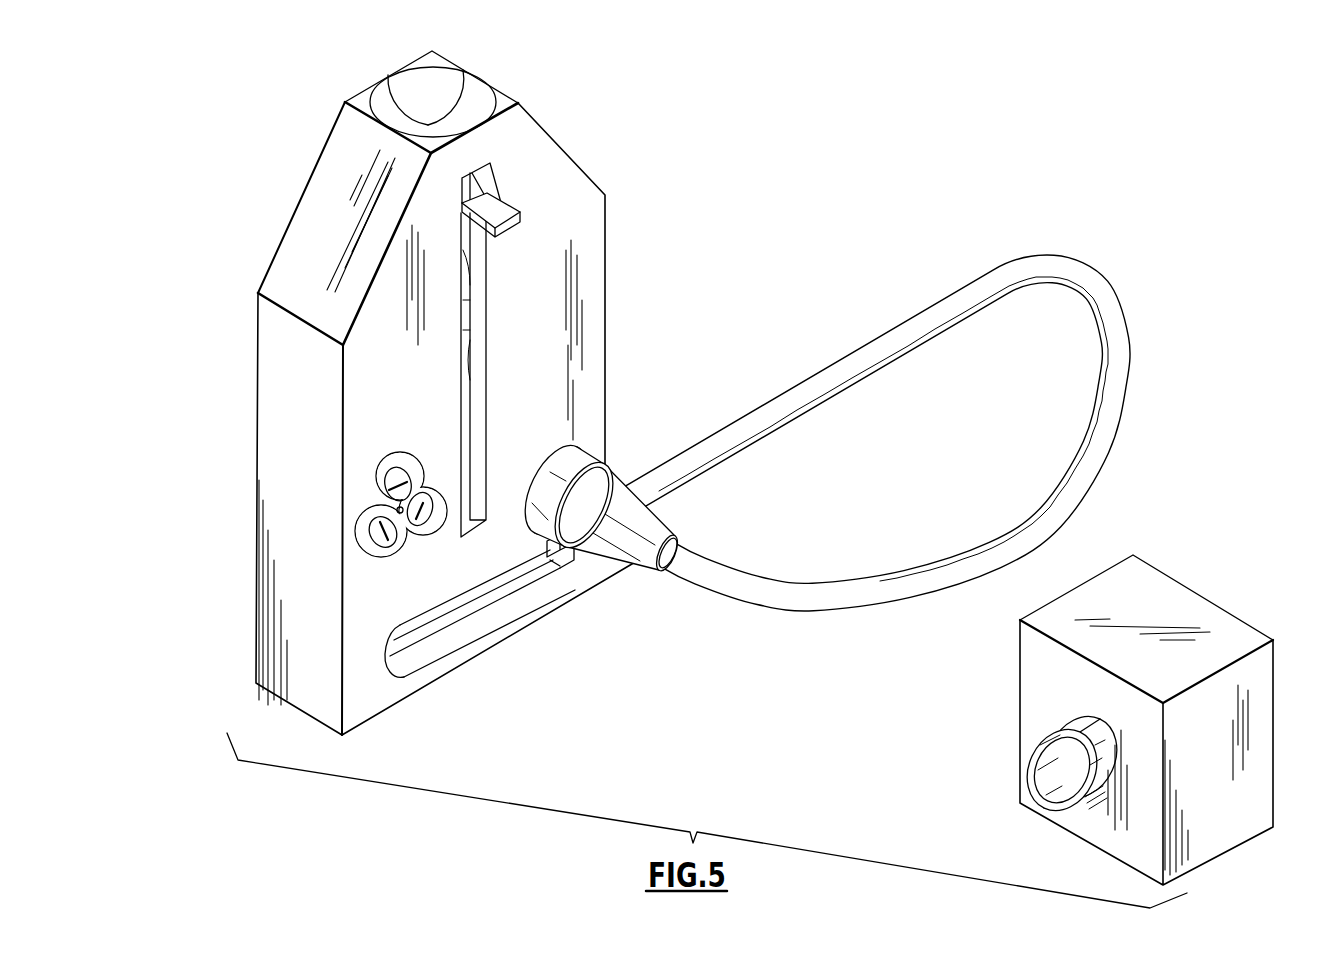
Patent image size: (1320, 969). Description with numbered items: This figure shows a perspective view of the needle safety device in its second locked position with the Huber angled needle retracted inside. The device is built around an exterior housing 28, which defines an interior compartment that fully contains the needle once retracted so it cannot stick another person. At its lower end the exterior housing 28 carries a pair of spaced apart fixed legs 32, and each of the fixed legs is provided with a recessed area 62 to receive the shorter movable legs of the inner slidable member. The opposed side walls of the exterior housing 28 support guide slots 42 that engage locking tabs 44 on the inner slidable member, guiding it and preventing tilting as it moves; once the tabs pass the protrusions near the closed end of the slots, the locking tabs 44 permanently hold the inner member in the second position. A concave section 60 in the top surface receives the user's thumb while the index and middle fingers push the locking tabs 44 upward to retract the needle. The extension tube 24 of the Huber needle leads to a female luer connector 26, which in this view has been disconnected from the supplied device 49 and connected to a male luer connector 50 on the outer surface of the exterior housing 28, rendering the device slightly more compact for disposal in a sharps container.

The extension tube 24 is at (848, 368).
The female luer connector 26 is at (620, 542).
The exterior housing 28 is at (287, 514).
The fixed legs 32 is at (488, 640).
The guide slots 42 is at (472, 384).
The locking tabs 44 is at (513, 215).
The supplied device 49 is at (1173, 620).
The male luer connector 50 is at (595, 455).
The concave section 60 is at (447, 83).
The recessed area 62 is at (545, 552).